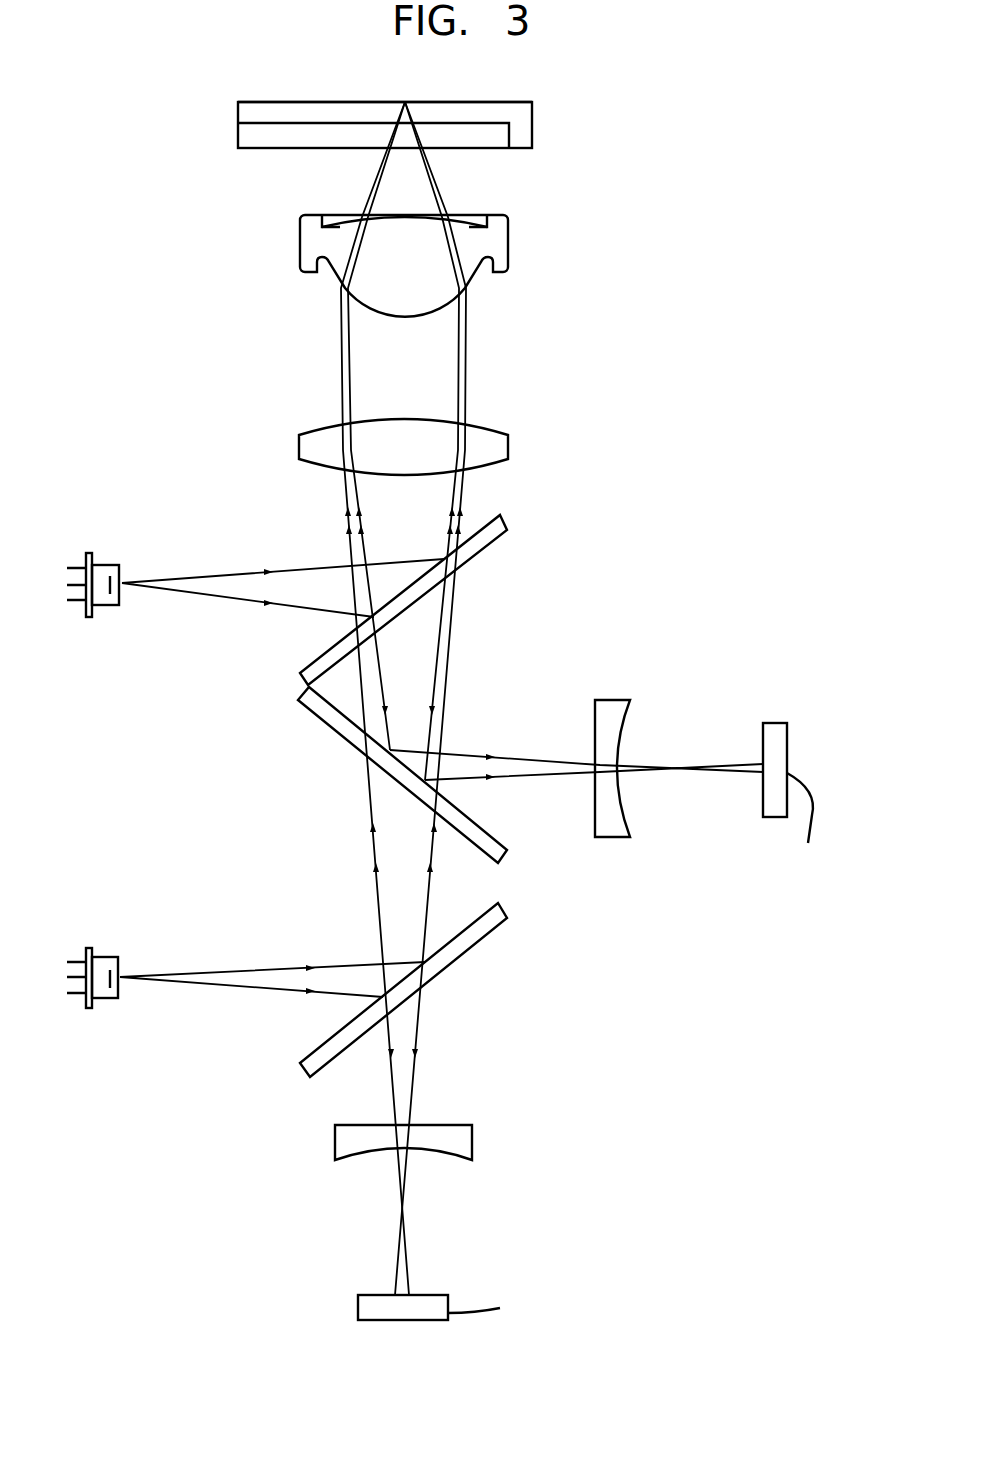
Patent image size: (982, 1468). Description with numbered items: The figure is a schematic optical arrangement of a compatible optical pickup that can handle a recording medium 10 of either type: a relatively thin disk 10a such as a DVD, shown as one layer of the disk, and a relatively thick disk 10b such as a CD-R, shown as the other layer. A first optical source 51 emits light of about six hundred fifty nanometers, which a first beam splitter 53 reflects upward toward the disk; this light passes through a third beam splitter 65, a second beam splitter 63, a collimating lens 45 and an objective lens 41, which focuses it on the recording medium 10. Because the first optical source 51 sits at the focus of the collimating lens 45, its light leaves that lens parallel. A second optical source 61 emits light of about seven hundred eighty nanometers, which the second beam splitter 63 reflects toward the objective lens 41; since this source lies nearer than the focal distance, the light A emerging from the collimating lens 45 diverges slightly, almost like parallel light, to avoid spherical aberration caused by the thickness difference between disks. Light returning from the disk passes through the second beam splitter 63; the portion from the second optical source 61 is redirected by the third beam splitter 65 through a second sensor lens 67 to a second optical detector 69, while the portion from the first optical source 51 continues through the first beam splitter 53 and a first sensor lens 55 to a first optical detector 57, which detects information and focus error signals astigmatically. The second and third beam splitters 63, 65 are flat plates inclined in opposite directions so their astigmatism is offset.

The recording medium 10 is at (552, 121).
The relatively thin disk 10a is at (238, 139).
The relatively thick disk 10b is at (255, 108).
The objective lens 41 is at (508, 243).
The collimating lens 45 is at (508, 445).
The first optical source 51 is at (106, 998).
The first beam splitter 53 is at (507, 918).
The first sensor lens 55 is at (454, 1126).
The first optical detector 57 is at (365, 1295).
The second optical source 61 is at (107, 605).
The second beam splitter 63 is at (507, 530).
The third beam splitter 65 is at (312, 724).
The second sensor lens 67 is at (615, 700).
The second optical detector 69 is at (773, 723).
The light emitted from the second optical source A is at (350, 372).